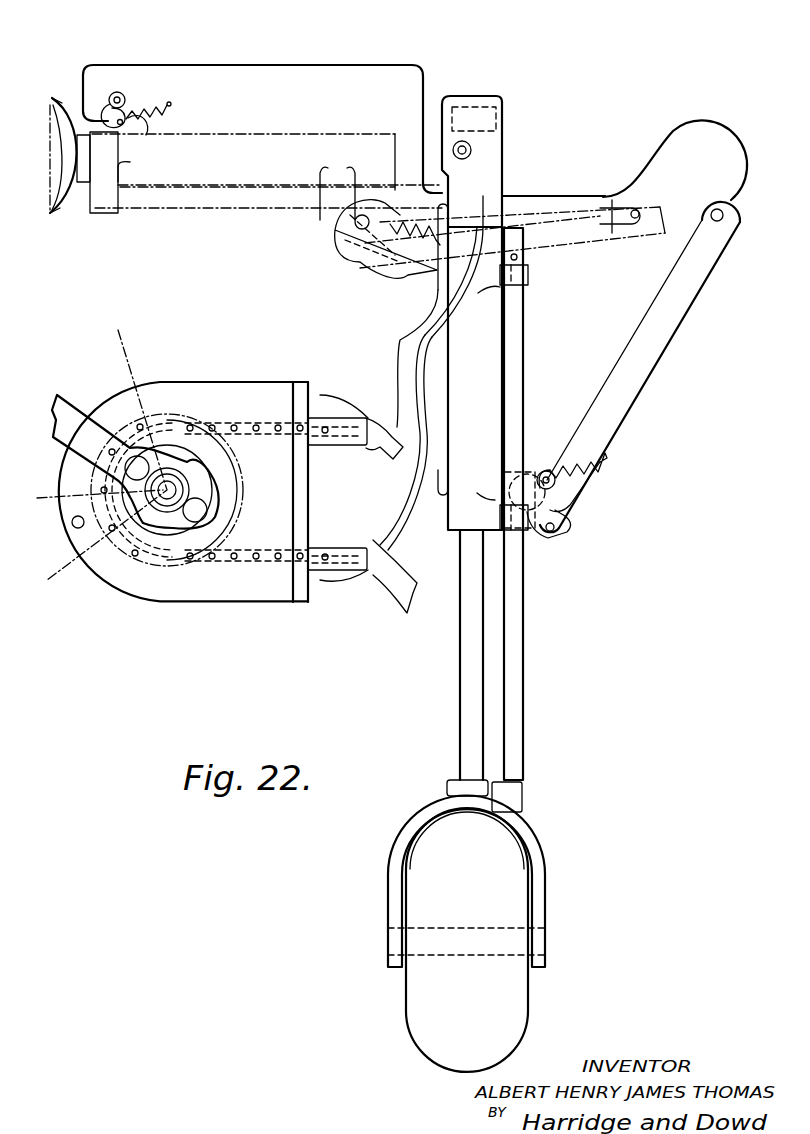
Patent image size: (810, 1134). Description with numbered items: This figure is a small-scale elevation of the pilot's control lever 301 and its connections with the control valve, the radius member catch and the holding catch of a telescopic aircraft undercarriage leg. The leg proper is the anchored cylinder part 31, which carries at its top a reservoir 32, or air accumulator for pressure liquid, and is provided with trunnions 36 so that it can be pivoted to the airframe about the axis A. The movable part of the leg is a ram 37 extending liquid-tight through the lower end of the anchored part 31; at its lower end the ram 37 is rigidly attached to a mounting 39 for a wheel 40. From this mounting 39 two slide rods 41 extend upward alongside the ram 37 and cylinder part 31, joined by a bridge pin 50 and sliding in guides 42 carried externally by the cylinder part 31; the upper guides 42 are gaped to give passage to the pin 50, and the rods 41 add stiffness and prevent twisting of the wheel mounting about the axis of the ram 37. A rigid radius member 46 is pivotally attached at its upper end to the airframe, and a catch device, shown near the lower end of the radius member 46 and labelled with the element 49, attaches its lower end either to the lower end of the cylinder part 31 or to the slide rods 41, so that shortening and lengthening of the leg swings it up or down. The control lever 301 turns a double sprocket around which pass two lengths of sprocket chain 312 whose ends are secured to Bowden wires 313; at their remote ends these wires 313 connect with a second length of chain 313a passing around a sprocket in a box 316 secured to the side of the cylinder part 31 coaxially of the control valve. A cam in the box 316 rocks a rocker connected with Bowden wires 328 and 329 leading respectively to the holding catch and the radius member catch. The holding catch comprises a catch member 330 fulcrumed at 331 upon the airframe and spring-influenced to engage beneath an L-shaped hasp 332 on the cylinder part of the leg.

The Bowden wire 328 is at (258, 42).
The catch member 330 is at (110, 117).
The fulcrum 331 is at (119, 95).
The L-shaped hasp 332 is at (150, 128).
The anchored cylinder part 31 is at (347, 145).
The reservoir 32 is at (480, 105).
The trunnions 36 is at (473, 150).
The pivotal axis A is at (468, 145).
The box 316 is at (472, 202).
The Bowden wire 329 is at (737, 203).
The radius member 46 is at (650, 352).
The bridge pin 50 is at (535, 473).
The pawl 49 is at (553, 545).
The guides 42 is at (532, 278).
The slide rods 41 is at (505, 693).
The ram 37 is at (460, 692).
The second length of chain 313a is at (420, 318).
The Bowden wires 313 is at (420, 587).
The sprocket chain 312 is at (233, 555).
The control lever 301 is at (73, 406).
The mounting 39 is at (393, 905).
The wheel 40 is at (500, 980).